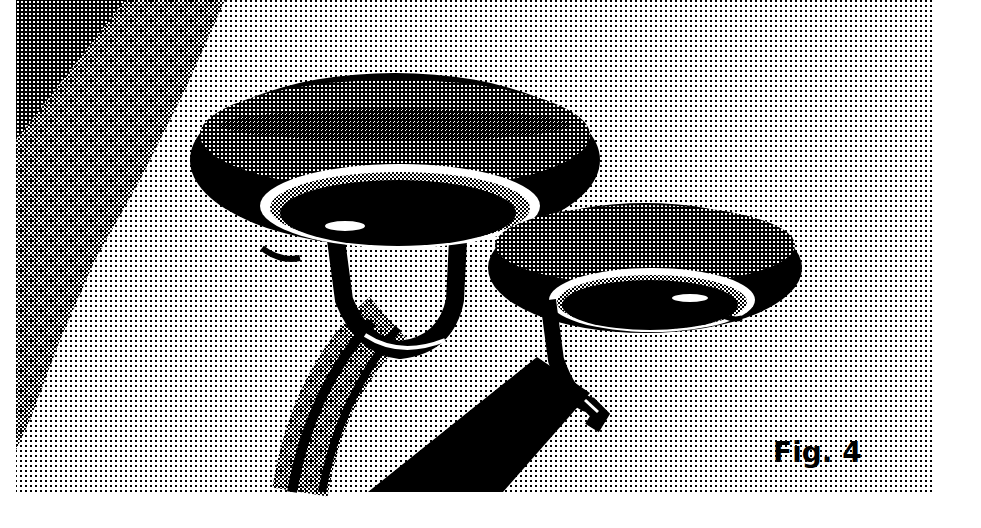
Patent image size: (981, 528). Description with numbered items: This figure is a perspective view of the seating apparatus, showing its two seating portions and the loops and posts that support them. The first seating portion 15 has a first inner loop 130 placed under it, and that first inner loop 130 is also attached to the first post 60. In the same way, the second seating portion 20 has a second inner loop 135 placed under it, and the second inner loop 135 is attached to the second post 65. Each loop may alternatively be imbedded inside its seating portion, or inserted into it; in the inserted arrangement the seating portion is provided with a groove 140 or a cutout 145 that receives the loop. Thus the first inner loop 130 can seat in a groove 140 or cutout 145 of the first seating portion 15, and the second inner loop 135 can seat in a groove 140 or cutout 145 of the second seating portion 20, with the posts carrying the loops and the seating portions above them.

The first seating portion 15 is at (227, 127).
The second seating portion 20 is at (727, 207).
The first post 60 is at (265, 440).
The second post 65 is at (507, 453).
The first inner loop 130 is at (473, 180).
The second inner loop 135 is at (650, 330).
The groove 140 is at (282, 236).
The cutout 145 is at (733, 310).